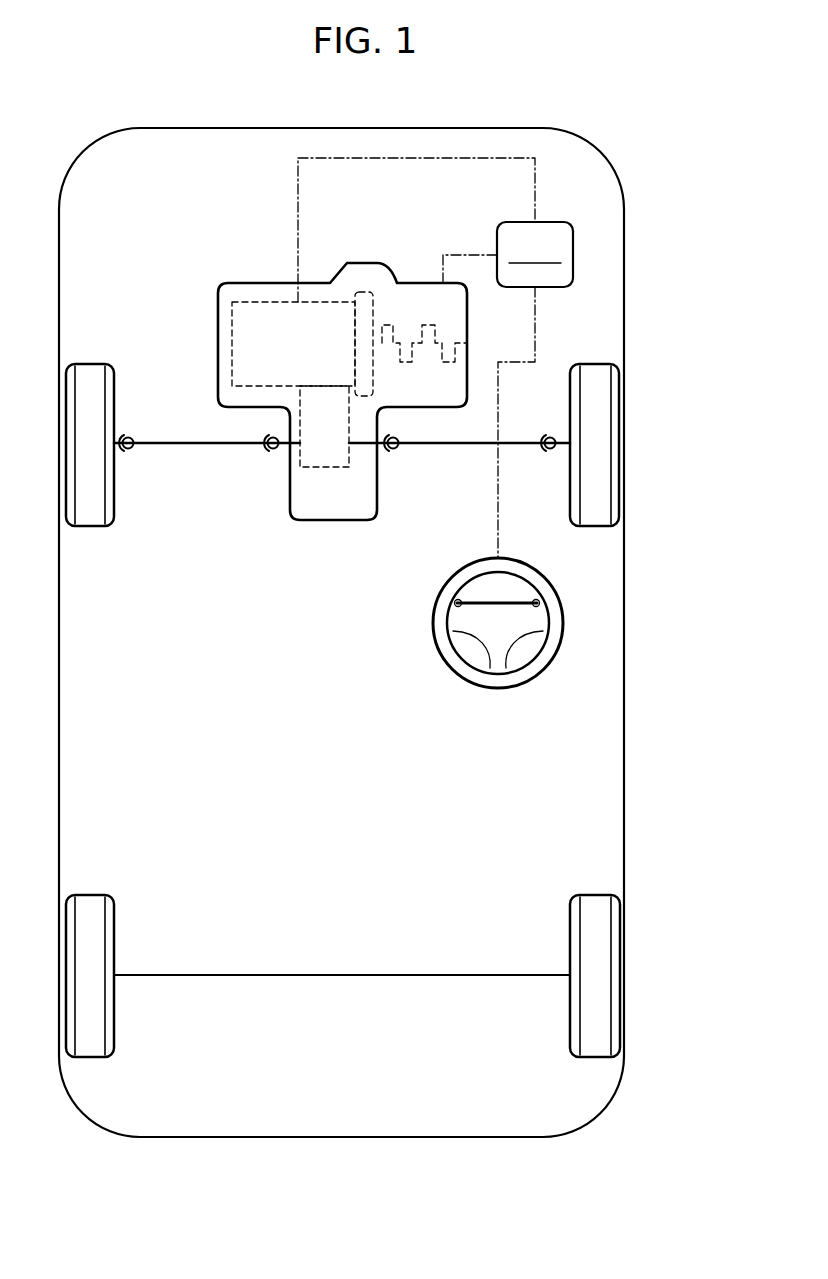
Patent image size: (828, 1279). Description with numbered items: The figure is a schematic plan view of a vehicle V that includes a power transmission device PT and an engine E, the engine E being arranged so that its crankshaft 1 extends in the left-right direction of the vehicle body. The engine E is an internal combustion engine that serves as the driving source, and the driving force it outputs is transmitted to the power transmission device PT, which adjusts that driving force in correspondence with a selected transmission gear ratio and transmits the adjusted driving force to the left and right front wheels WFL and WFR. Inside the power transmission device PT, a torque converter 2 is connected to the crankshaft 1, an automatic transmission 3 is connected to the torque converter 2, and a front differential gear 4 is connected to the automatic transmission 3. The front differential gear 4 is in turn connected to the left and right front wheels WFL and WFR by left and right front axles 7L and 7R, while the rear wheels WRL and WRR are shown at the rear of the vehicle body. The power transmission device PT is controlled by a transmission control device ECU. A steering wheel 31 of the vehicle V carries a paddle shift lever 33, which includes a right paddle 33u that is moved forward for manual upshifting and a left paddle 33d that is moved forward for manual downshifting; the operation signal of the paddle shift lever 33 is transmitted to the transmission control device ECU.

The vehicle V is at (599, 146).
The power transmission device PT is at (278, 250).
The engine E is at (421, 282).
The transmission control device ECU is at (435, 358).
The crankshaft 1 is at (403, 362).
The torque converter 2 is at (368, 265).
The automatic transmission 3 is at (245, 283).
The front differential gear 4 is at (349, 455).
The left front axle 7L is at (228, 447).
The right front axle 7R is at (487, 447).
The left front wheel WFL is at (90, 386).
The right front wheel WFR is at (595, 375).
The rear left wheel WRL is at (90, 912).
The rear right wheel WRR is at (595, 912).
The steering wheel 31 is at (445, 655).
The paddle shift lever 33 is at (352, 553).
The right paddle 33u is at (534, 601).
The left paddle 33d is at (456, 602).